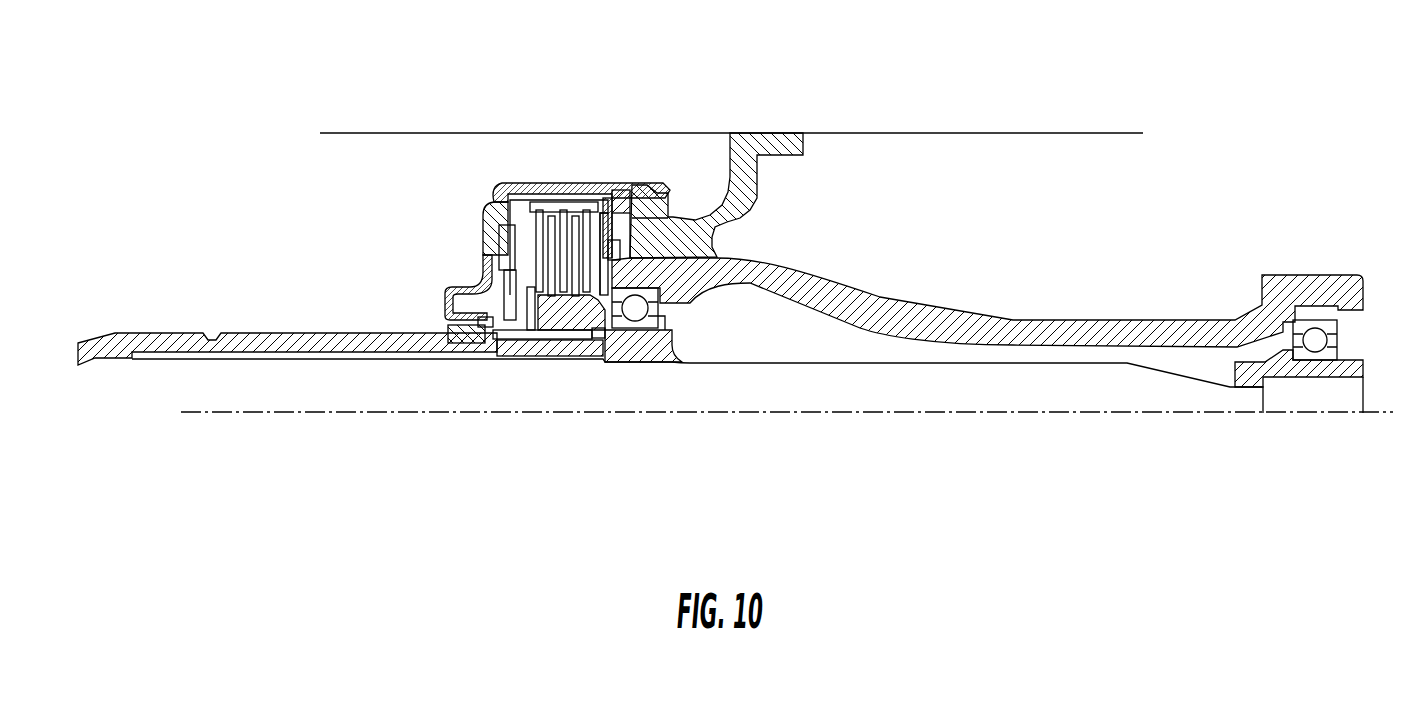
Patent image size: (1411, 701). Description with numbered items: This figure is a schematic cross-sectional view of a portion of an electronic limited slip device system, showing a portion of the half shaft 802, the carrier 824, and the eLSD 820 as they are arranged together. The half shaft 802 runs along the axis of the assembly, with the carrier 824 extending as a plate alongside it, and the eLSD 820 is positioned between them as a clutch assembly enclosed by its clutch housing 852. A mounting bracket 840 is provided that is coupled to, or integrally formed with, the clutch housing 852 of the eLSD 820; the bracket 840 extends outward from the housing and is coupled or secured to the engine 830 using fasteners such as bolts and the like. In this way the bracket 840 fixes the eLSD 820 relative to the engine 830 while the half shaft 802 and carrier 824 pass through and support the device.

The half shaft 802 is at (857, 382).
The eLSD 820 is at (459, 231).
The carrier 824 is at (244, 334).
The engine 830 is at (910, 135).
The mounting bracket 840 is at (775, 150).
The clutch housing 852 is at (582, 187).